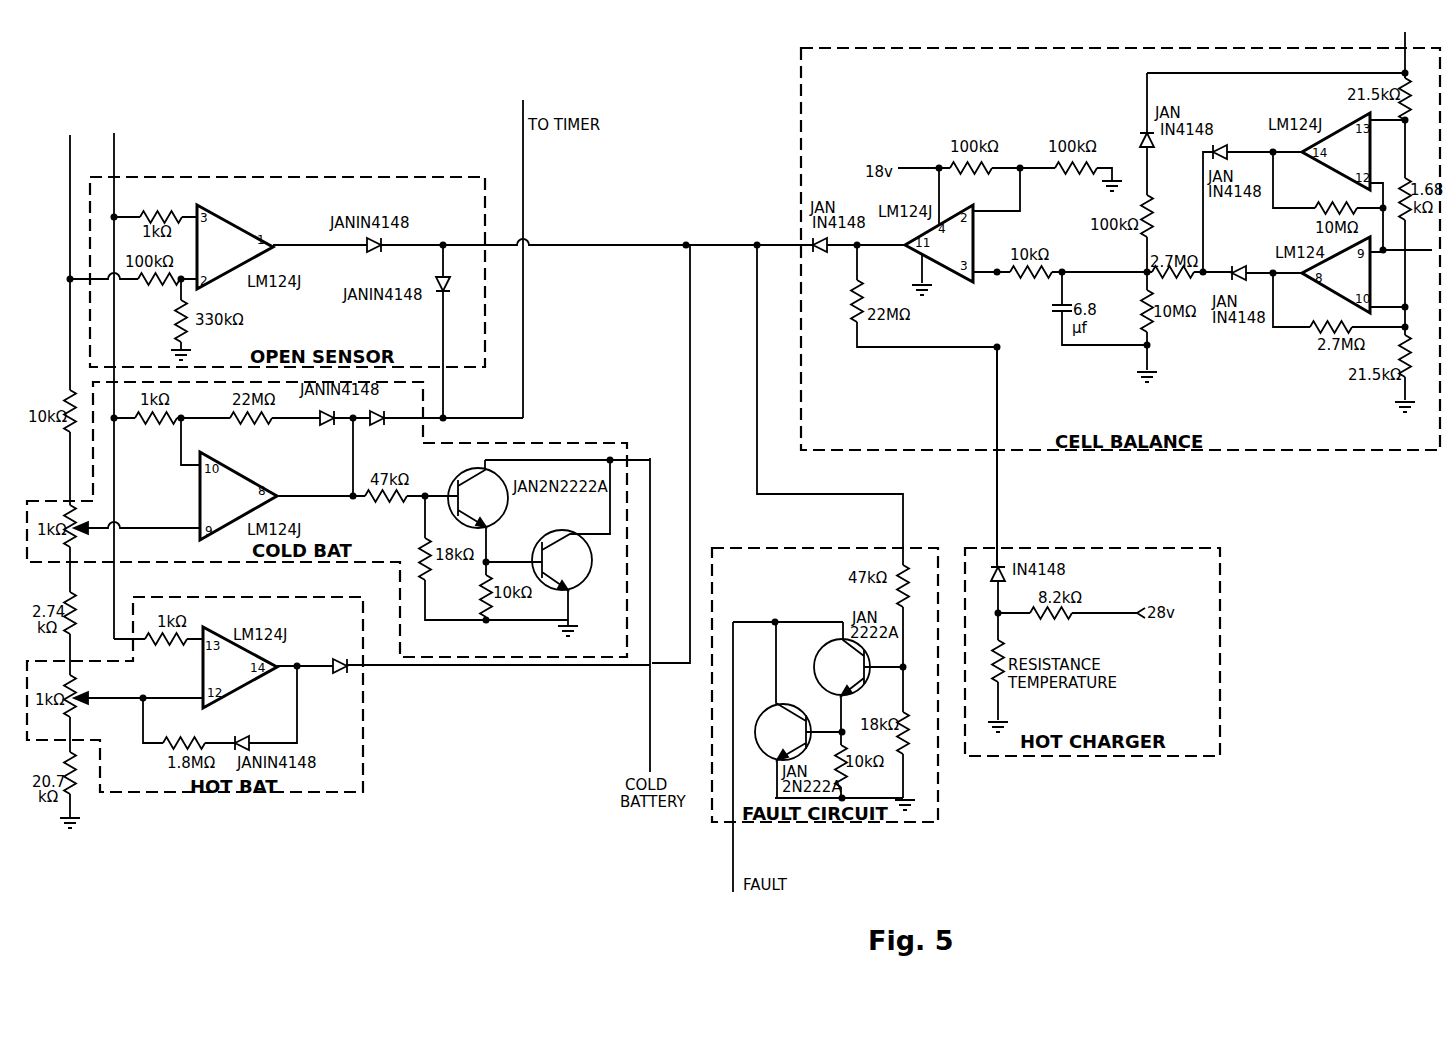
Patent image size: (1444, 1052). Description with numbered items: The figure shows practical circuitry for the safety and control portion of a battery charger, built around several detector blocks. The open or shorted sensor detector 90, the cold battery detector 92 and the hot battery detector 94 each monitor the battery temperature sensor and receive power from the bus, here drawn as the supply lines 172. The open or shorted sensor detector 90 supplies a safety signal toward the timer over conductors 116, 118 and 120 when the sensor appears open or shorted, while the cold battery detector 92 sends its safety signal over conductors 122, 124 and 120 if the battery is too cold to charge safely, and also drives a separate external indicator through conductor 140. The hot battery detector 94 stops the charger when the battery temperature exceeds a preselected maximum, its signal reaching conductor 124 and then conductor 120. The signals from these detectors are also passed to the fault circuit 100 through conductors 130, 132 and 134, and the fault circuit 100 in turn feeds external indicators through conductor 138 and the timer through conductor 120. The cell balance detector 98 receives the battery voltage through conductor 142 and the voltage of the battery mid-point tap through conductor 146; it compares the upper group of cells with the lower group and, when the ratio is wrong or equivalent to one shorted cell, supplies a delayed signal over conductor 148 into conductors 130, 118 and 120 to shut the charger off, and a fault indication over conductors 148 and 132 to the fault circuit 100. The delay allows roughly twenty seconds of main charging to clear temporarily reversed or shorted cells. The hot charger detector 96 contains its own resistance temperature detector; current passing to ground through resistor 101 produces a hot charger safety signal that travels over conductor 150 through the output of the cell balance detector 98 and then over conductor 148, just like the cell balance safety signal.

The open or shorted sensor detector 90 is at (354, 176).
The cold battery detector 92 is at (538, 443).
The hot battery detector 94 is at (366, 754).
The hot charger detector 96 is at (1221, 612).
The cell balance detector 98 is at (1174, 452).
The fault circuit 100 is at (940, 772).
The resistor 101 is at (1002, 700).
The conductor 116 is at (416, 235).
The conductor 118 is at (445, 333).
The conductor 120 is at (525, 370).
The conductor 122 is at (353, 453).
The conductor 124 is at (383, 423).
The conductor 130 is at (578, 245).
The conductor 132 is at (757, 420).
The conductor 134 is at (432, 671).
The conductor 138 is at (735, 853).
The conductor 140 is at (650, 695).
The conductor 142 is at (1404, 40).
The conductor 146 is at (1425, 252).
The conductor 148 is at (770, 245).
The conductor 150 is at (999, 512).
The battery voltage lines 172 is at (70, 177).